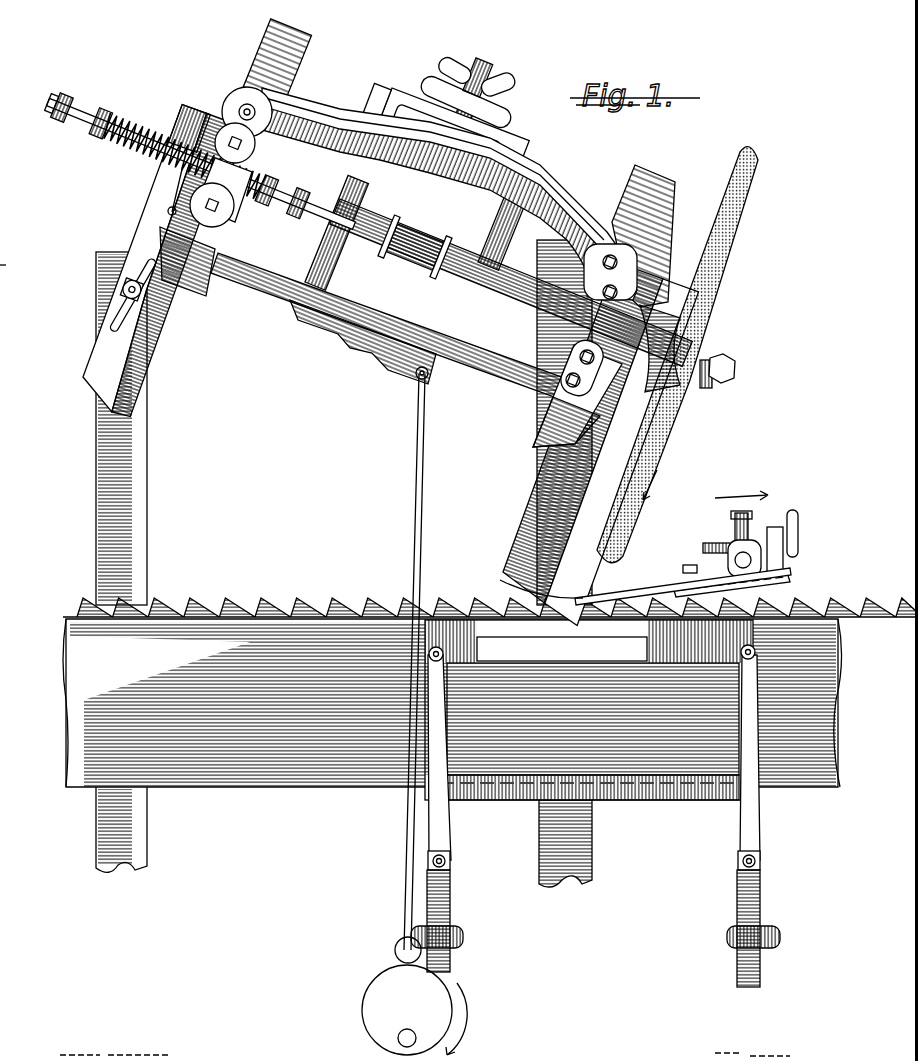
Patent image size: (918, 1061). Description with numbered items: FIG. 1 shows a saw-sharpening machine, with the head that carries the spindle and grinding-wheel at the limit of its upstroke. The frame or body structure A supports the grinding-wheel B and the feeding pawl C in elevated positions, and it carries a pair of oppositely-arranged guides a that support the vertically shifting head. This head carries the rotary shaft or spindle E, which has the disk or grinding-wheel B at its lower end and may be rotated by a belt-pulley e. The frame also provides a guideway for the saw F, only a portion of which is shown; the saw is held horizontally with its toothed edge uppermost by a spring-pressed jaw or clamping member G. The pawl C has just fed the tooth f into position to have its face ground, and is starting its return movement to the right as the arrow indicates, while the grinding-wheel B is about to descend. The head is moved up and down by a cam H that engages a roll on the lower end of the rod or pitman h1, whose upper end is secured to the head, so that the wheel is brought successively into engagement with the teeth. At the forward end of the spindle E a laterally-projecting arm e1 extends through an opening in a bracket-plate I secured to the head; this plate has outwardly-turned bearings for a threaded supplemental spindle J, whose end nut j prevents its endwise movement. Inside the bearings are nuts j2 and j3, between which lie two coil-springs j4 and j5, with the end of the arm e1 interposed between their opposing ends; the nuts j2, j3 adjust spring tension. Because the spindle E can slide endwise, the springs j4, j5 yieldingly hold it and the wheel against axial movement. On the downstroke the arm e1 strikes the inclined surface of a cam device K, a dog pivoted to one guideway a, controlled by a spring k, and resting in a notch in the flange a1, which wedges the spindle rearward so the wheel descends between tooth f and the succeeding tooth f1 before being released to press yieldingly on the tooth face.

The frame or body structure A is at (133, 444).
The grinding-wheel B is at (280, 52).
The feeding pawl C is at (657, 592).
The rotary shaft or spindle E is at (450, 270).
The saw F is at (363, 748).
The spring-pressed jaw or clamping member G is at (589, 710).
The cam H is at (383, 986).
The bracket-plate I is at (118, 130).
The supplemental spindle J is at (304, 212).
The cam device K is at (172, 200).
The guides a is at (152, 347).
The flange of the guideway a1 is at (168, 212).
The belt-pulley e is at (415, 232).
The laterally-projecting arm e1 is at (187, 143).
The tooth f is at (525, 583).
The succeeding tooth f1 is at (617, 596).
The rod or pitman h1 is at (416, 500).
The end nut j is at (72, 100).
The adjusting nut j2 is at (116, 116).
The adjusting nut j3 is at (278, 182).
The coil-spring j4 is at (152, 140).
The coil-spring j5 is at (264, 200).
The spring k is at (396, 947).